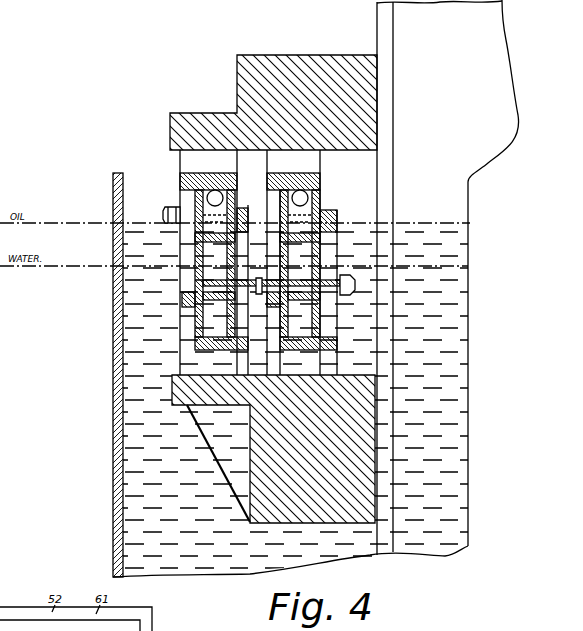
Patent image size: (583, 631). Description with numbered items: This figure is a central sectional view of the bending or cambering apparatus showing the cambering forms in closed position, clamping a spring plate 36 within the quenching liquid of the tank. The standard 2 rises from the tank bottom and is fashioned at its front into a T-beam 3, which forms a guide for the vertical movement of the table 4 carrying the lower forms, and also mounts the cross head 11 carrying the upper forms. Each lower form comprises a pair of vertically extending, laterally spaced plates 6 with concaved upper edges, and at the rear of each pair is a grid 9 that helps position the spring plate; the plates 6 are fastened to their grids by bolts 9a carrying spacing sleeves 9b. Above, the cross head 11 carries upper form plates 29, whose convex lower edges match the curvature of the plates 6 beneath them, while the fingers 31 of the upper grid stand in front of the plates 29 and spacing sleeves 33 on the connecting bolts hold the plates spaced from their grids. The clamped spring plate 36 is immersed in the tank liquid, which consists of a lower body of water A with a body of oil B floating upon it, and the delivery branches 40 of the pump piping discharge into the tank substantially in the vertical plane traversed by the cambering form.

The standard 2 is at (316, 288).
The T-beam 3 is at (388, 190).
The table 4 is at (273, 449).
The plates 6 is at (483, 344).
The grid 9 is at (337, 222).
The bolts 9a is at (185, 306).
The spacing sleeve 9b is at (222, 288).
The cross head 11 is at (325, 36).
The plates 29 is at (165, 215).
The fingers 31 is at (195, 293).
The spacing sleeves 33 is at (310, 203).
The spring plate 36 is at (203, 258).
The branches 40 is at (308, 185).
The body of water A is at (171, 504).
The body of oil B is at (356, 242).